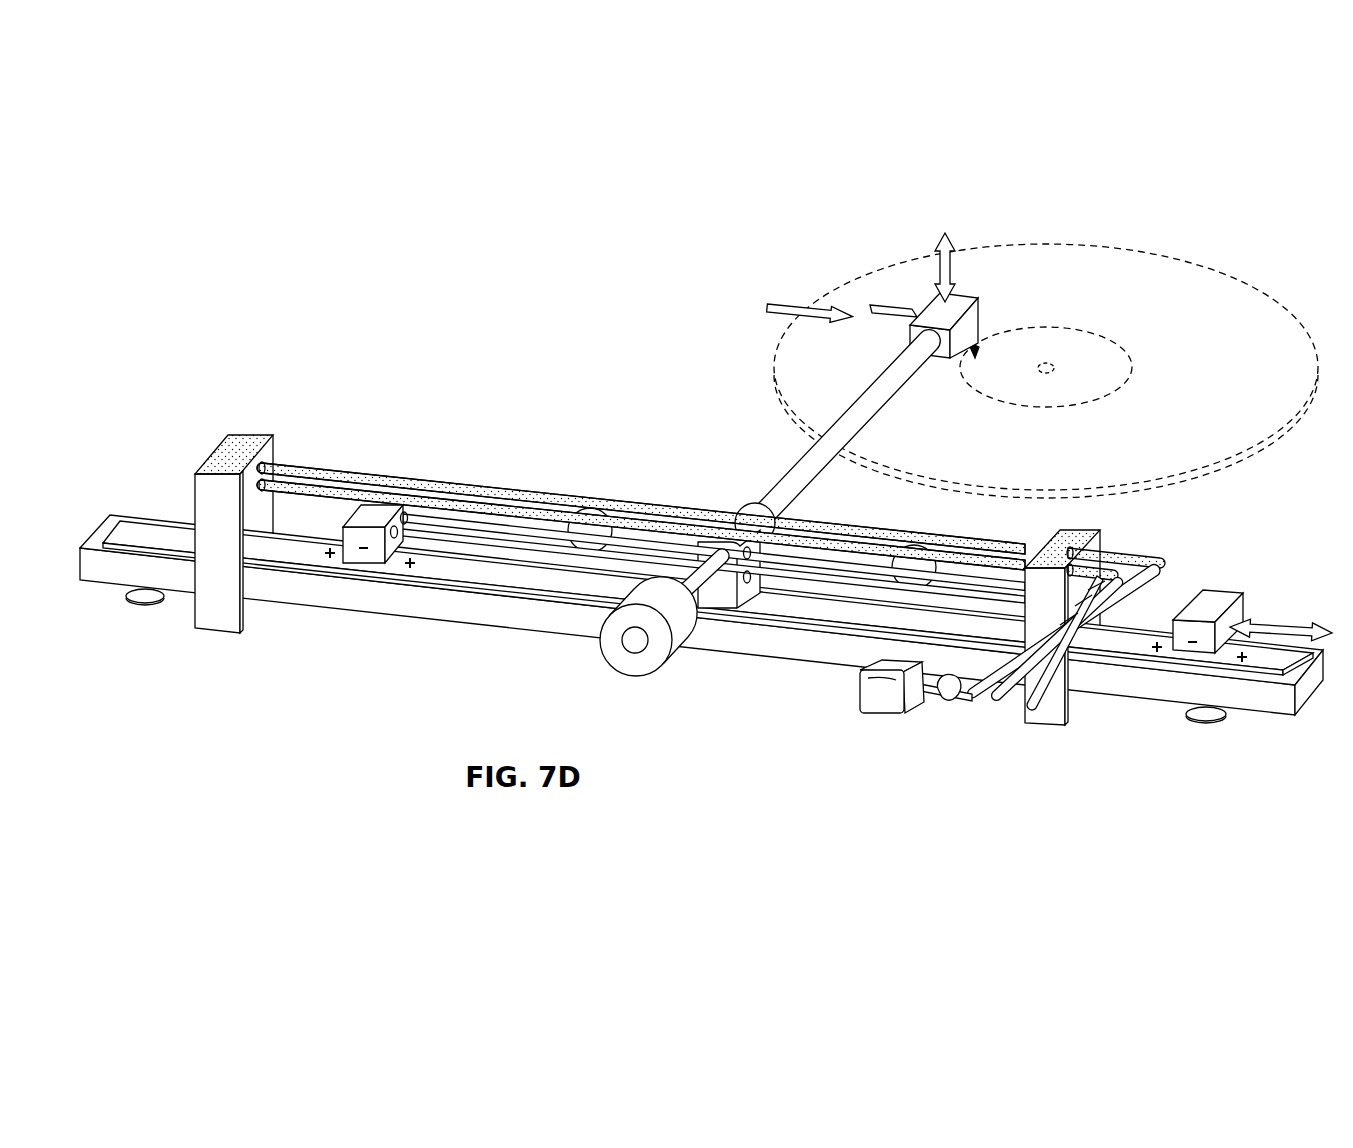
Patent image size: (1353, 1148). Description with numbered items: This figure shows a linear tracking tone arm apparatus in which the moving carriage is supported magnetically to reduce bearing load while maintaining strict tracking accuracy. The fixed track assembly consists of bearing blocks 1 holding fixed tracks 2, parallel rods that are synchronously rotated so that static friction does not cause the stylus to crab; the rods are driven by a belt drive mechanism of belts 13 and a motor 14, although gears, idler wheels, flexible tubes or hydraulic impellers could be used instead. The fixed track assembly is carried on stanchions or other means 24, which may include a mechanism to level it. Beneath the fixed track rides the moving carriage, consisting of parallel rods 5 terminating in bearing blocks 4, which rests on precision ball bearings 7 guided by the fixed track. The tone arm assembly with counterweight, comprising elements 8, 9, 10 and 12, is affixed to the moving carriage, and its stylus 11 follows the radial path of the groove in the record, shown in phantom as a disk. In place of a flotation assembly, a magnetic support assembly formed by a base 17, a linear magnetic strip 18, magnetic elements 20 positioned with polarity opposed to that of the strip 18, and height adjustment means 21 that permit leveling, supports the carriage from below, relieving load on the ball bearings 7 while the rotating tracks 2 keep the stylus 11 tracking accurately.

The bearing blocks 1 is at (232, 453).
The fixed tracks 2 is at (398, 480).
The bearing blocks 4 is at (1222, 632).
The parallel rods 5 is at (495, 548).
The precision ball bearings 7 is at (582, 538).
The tone arm assembly 8 is at (740, 510).
The tone arm assembly 9 is at (803, 470).
The tone arm assembly 10 is at (872, 279).
The stylus 11 is at (975, 350).
The tone arm assembly 12 is at (628, 660).
The belts 13 is at (982, 698).
The motor 14 is at (878, 695).
The base 17 is at (108, 522).
The linear magnetic strip 18 is at (445, 563).
The magnetic support assembly 20 is at (360, 560).
The height adjustment means 21 is at (136, 606).
The stanchions 24 is at (270, 441).